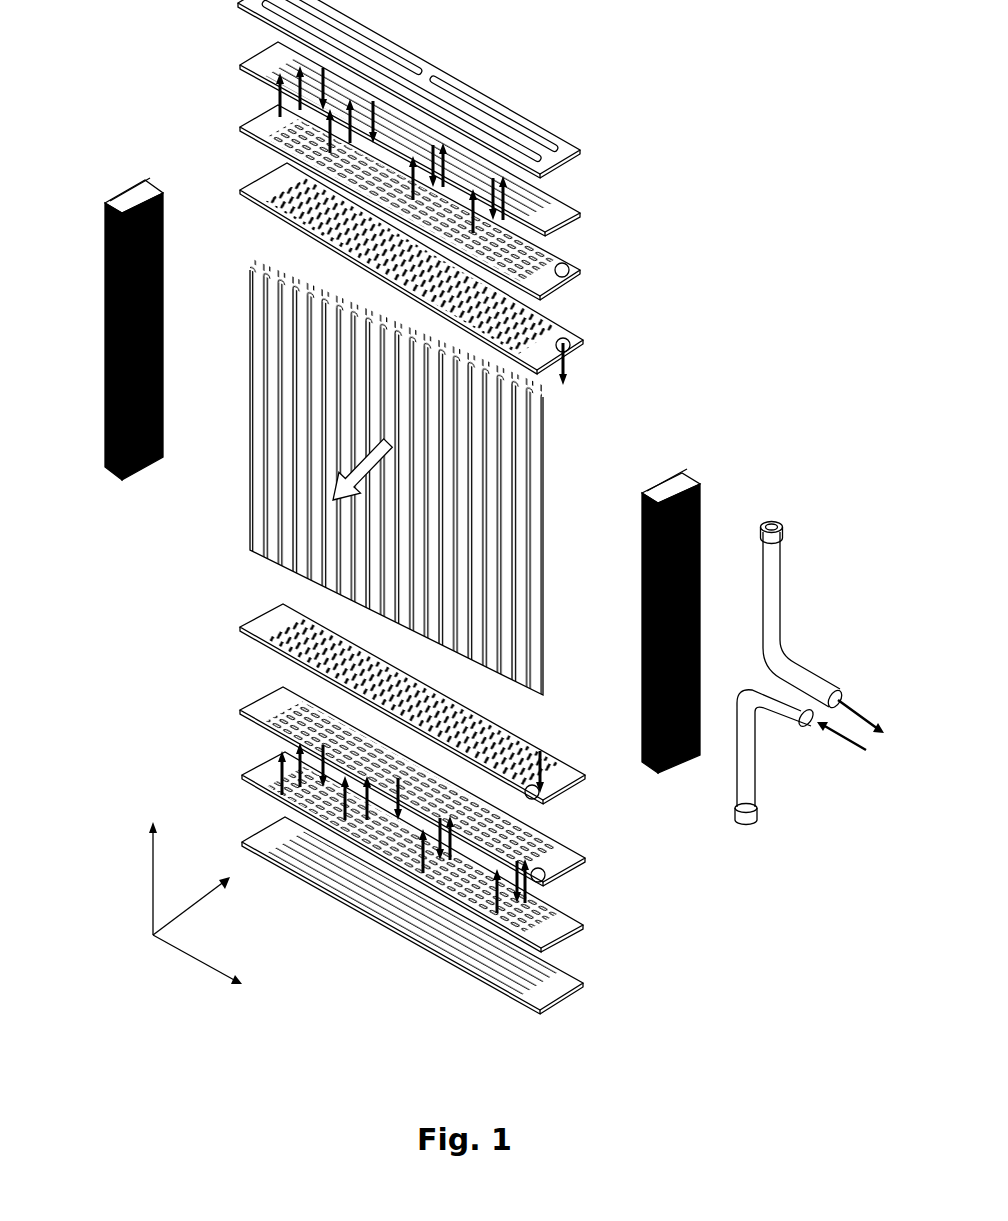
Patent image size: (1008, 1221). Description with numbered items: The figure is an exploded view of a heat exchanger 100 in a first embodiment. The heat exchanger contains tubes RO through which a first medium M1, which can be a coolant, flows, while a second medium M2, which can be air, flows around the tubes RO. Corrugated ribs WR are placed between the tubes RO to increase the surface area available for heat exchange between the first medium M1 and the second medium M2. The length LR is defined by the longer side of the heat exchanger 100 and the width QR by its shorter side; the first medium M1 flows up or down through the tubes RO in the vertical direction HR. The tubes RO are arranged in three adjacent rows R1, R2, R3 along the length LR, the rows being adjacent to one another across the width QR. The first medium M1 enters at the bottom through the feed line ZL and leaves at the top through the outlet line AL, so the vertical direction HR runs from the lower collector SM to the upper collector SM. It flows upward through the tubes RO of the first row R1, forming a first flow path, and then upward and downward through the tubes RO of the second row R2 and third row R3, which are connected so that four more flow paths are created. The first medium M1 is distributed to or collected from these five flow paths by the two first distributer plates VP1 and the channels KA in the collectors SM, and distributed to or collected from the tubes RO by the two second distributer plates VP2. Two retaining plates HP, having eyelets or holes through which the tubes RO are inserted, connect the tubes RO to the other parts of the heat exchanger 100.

The heat exchanger 100 is at (156, 118).
The channels KA is at (503, 110).
The collector SM is at (547, 160).
The first distributer plate VP1 is at (550, 225).
The second distributer plate VP2 is at (548, 280).
The retaining plate HP is at (567, 350).
The tubes RO is at (398, 476).
The first row R1 is at (513, 475).
The second row R2 is at (530, 448).
The third row R3 is at (538, 420).
The corrugated ribs WR is at (118, 378).
The second medium M2 is at (360, 472).
The first medium M1 is at (848, 745).
The outlet line AL is at (777, 595).
The feed line ZL is at (745, 762).
The vertical direction HR is at (134, 878).
The width QR is at (207, 906).
The length LR is at (197, 971).